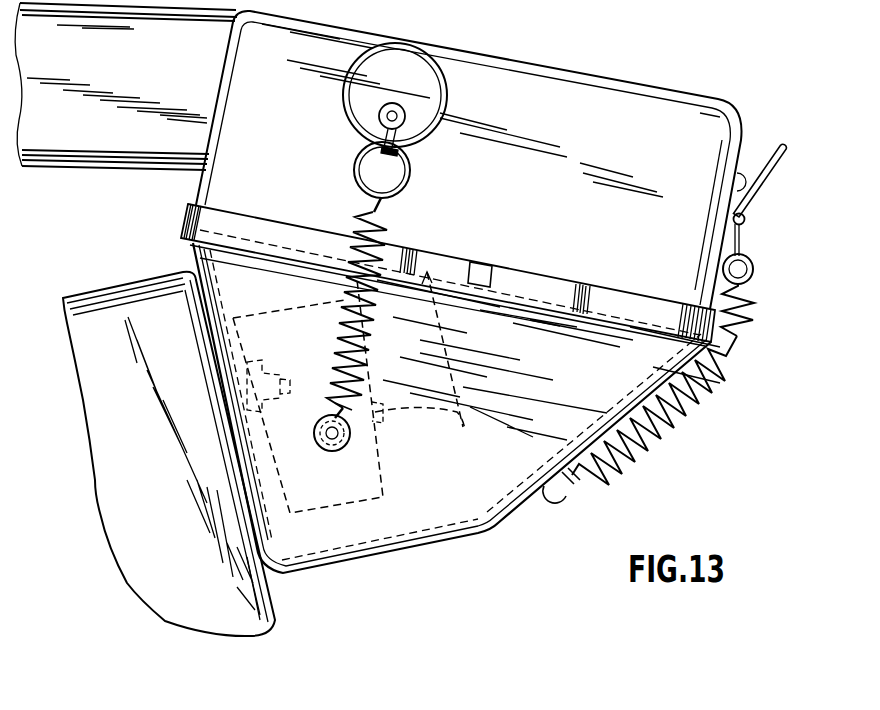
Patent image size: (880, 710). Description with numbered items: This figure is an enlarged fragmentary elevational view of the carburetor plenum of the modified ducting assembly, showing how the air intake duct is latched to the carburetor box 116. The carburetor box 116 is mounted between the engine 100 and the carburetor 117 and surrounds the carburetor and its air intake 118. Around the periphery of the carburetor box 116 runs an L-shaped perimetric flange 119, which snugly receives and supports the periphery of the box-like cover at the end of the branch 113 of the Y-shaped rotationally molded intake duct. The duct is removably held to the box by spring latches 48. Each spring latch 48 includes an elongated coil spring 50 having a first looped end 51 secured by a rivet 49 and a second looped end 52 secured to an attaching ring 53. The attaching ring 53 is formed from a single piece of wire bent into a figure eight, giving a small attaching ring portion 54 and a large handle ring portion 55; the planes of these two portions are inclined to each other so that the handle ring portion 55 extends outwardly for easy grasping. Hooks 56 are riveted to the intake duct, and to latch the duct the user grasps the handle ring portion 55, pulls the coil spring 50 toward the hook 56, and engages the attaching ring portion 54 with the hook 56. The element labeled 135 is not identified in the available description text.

The spring latch 48 is at (347, 280).
The rivet 49 is at (333, 451).
The elongated coil spring 50 is at (647, 437).
The first looped end 51 is at (567, 478).
The second looped end 52 is at (757, 270).
The attaching ring 53 is at (343, 115).
The small attaching ring portion 54 is at (353, 173).
The large handle ring portion 55 is at (447, 87).
The hook 56 is at (410, 148).
The engine 100 is at (152, 603).
The branch 113 is at (93, 153).
The carburetor box 116 is at (473, 507).
The carburetor 117 is at (367, 487).
The air intake 118 is at (433, 387).
The L-shaped perimetric flange 119 is at (558, 290).
The stop 135 is at (483, 264).